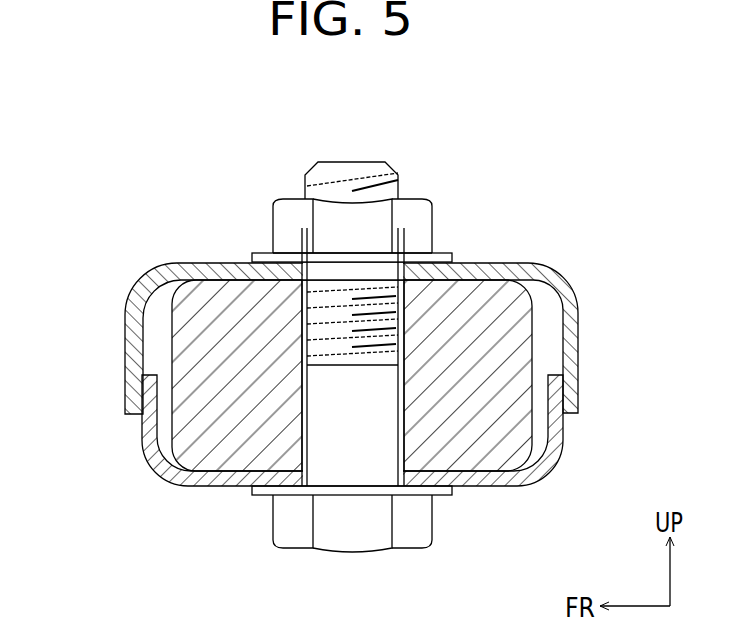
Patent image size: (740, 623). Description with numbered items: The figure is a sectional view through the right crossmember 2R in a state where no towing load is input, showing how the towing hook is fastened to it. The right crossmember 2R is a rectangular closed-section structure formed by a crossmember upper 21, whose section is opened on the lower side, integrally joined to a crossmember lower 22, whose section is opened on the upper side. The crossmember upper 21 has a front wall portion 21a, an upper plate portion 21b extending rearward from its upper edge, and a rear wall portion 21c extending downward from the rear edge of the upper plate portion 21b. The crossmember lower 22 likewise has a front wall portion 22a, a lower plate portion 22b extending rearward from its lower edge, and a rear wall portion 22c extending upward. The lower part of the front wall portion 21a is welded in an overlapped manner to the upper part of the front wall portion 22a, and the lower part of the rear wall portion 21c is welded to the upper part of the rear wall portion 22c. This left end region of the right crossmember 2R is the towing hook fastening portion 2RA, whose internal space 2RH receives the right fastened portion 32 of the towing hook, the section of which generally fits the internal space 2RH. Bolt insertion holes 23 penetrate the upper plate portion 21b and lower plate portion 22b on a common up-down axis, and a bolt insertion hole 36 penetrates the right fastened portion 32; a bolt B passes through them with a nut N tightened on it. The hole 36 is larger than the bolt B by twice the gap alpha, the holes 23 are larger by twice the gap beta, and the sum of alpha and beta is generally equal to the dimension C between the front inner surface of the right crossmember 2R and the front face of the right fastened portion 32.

The right crossmember 2R is at (190, 262).
The towing hook fastening portion 2RA is at (473, 262).
The internal space 2RH is at (156, 305).
The crossmember upper 21 is at (556, 266).
The front wall portion 21a is at (125, 355).
The upper plate portion 21b is at (500, 262).
The rear wall portion 21c is at (580, 350).
The crossmember lower 22 is at (536, 486).
The front wall portion 22a is at (147, 448).
The lower plate portion 22b is at (480, 488).
The rear wall portion 22c is at (565, 430).
The bolt insertion hole 23 is at (322, 272).
The right fastened portion 32 is at (516, 335).
The bolt insertion hole 36 is at (308, 456).
The bolt B is at (272, 521).
The nut N is at (343, 222).
The dimension C is at (195, 392).